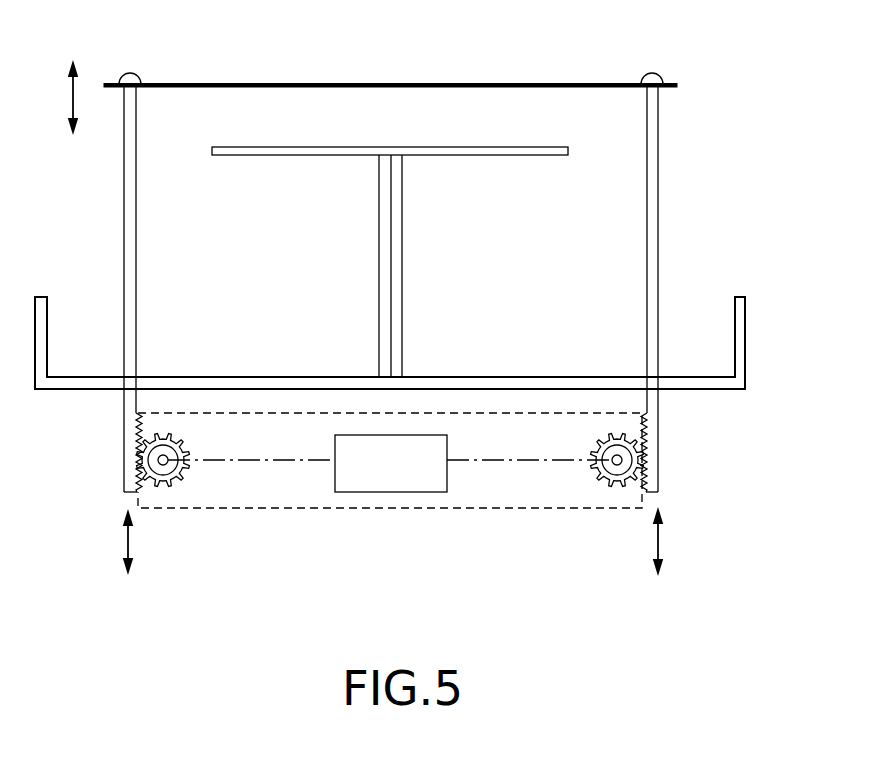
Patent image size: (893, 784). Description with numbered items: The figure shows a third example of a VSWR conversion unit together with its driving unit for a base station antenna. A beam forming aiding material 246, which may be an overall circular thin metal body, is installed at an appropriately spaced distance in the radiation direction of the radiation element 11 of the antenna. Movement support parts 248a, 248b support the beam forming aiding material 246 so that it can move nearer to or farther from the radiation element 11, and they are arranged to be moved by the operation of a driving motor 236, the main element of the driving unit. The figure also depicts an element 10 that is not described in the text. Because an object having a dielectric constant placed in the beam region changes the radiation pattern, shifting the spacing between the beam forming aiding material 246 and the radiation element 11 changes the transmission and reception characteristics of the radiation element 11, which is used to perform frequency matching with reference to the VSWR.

The tray 10 is at (738, 340).
The radiation element 11 is at (420, 137).
The beam forming aiding material 246 is at (563, 84).
The movement support part 248a is at (658, 230).
The movement support part 248b is at (136, 230).
The driving motor 236 is at (385, 492).